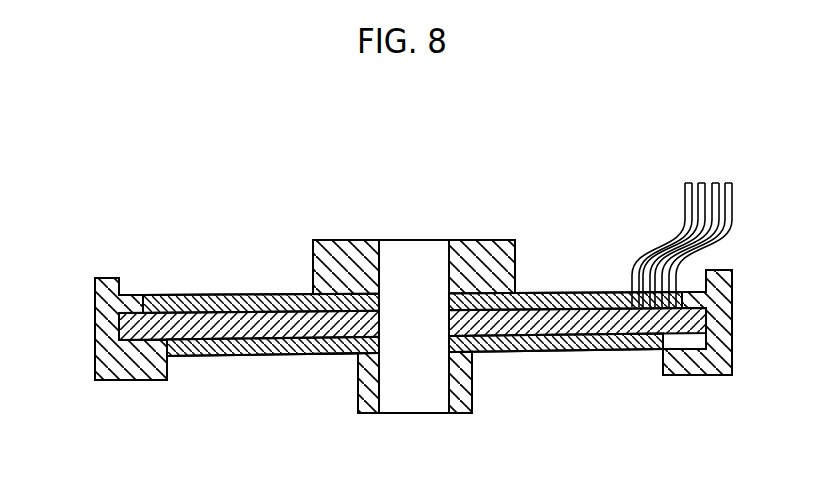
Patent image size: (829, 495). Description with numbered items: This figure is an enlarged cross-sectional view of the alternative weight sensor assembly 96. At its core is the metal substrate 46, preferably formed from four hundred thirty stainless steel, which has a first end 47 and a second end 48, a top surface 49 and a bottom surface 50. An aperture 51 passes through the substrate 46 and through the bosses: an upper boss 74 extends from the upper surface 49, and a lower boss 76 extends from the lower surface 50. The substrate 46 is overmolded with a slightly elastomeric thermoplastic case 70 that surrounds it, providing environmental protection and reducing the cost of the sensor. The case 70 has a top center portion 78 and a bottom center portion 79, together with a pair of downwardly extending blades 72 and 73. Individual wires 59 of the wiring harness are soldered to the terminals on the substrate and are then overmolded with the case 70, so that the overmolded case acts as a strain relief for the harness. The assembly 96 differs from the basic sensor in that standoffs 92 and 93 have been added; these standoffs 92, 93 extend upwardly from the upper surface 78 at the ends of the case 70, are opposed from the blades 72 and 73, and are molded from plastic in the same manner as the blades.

The weight sensor assembly 96 is at (294, 219).
The top center portion 78 is at (253, 293).
The first end 47 is at (97, 337).
The metal substrate 46 is at (296, 342).
The blade 72 is at (115, 381).
The standoff 92 is at (103, 277).
The top surface 49 is at (141, 306).
The case 70 is at (187, 356).
The bottom center portion 79 is at (332, 356).
The upper boss 74 is at (518, 243).
The lower boss 76 is at (473, 390).
The aperture 51 is at (421, 265).
The bottom surface 50 is at (605, 353).
The blade 73 is at (708, 376).
The standoff 93 is at (714, 268).
The second end 48 is at (712, 322).
The wires 59 is at (733, 193).